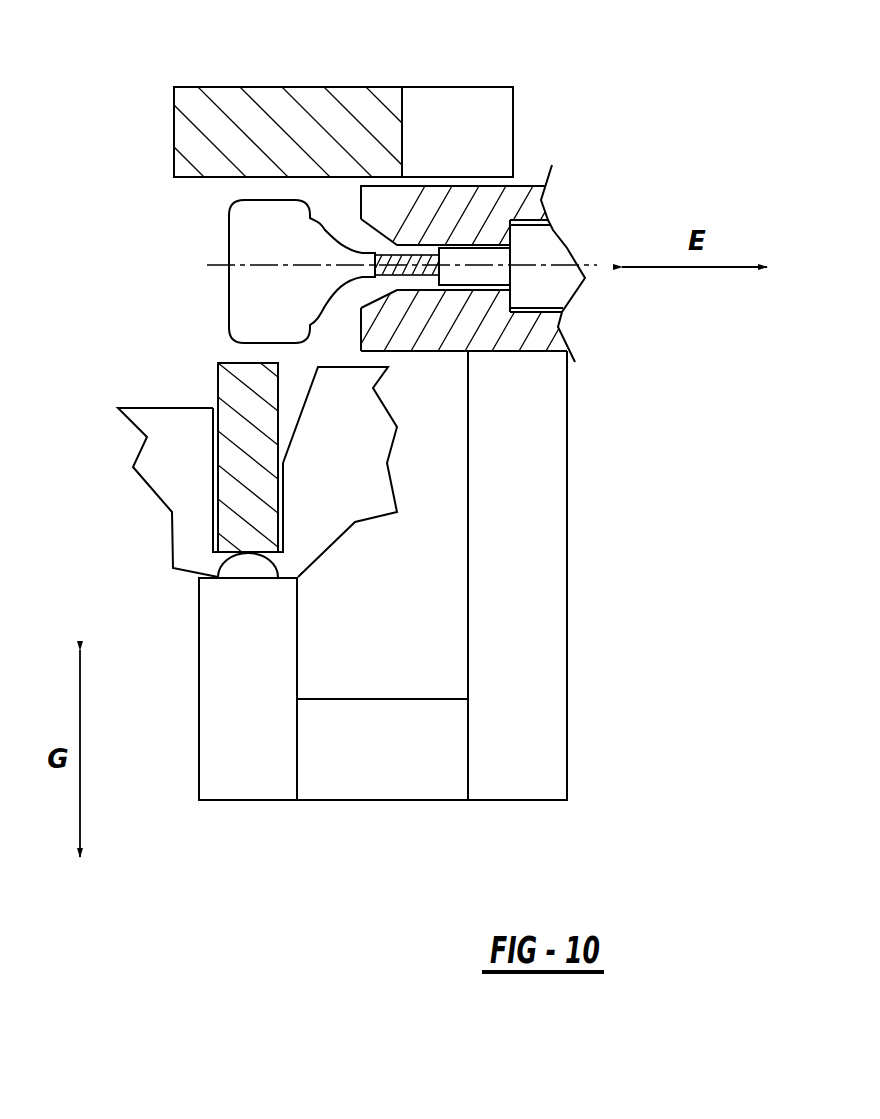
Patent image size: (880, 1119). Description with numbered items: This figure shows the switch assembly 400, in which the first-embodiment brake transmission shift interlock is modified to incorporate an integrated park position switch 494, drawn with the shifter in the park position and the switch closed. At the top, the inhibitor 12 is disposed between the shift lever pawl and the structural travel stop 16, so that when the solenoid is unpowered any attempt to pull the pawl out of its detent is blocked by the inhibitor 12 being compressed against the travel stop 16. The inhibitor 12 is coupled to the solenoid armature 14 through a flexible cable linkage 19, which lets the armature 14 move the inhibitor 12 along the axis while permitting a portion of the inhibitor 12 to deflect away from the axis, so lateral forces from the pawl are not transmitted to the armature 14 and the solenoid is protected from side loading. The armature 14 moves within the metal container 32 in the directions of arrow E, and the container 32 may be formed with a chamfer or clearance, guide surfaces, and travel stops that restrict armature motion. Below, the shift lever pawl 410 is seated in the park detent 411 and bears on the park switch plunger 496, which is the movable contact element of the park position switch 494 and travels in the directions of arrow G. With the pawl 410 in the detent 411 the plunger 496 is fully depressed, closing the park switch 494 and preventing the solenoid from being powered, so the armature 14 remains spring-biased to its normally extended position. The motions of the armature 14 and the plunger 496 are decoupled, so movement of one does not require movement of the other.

The structural travel stop 16 is at (295, 87).
The metal container 32 is at (518, 197).
The solenoid armature 14 is at (557, 286).
The flexible cable linkage 19 is at (418, 268).
The inhibitor 12 is at (237, 233).
The shift lever pawl 410 is at (230, 385).
The park detent 411 is at (208, 480).
The park switch plunger 496 is at (248, 565).
The switch assembly 400 is at (337, 916).
The park position switch 494 is at (235, 776).